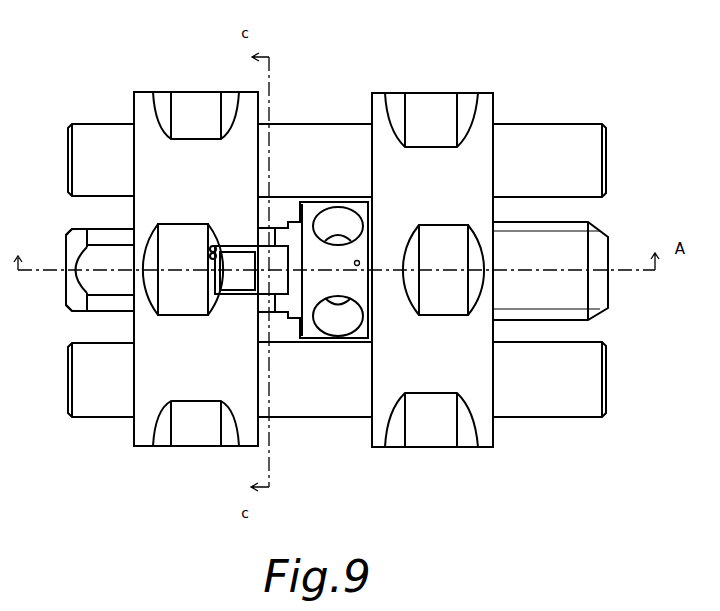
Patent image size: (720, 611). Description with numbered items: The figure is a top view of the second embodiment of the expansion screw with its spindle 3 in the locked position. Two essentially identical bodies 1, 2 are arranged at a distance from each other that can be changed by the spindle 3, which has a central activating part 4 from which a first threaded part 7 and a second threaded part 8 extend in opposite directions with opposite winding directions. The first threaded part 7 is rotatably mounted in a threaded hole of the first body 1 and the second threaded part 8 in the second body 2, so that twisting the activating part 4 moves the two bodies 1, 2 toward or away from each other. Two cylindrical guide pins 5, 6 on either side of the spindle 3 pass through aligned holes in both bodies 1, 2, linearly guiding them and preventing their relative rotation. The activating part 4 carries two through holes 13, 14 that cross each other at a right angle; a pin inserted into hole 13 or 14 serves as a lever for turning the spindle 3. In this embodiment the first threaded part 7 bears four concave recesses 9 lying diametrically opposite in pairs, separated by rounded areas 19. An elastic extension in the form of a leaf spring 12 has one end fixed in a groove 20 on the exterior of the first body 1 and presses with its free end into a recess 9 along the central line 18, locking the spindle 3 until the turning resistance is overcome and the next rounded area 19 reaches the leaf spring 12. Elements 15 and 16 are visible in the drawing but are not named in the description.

The first body 1 is at (143, 108).
The second body 2 is at (482, 110).
The spindle 3 is at (550, 243).
The activating part 4 is at (359, 262).
The guide pin 5 is at (97, 135).
The guide pin 6 is at (118, 408).
The first threaded part 7 is at (72, 298).
The second threaded part 8 is at (568, 293).
The recess 9 is at (86, 256).
The leaf spring 12 is at (237, 280).
The through hole 13 is at (345, 318).
The through hole 14 is at (338, 217).
The screw head 15 is at (183, 293).
The recess 16 is at (187, 110).
The central line 18 is at (515, 272).
The rounded area 19 is at (100, 237).
The groove 20 is at (215, 246).